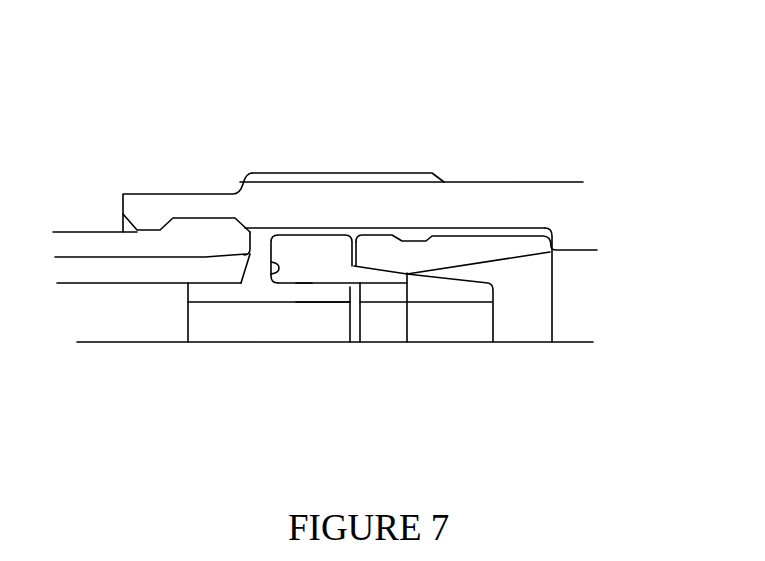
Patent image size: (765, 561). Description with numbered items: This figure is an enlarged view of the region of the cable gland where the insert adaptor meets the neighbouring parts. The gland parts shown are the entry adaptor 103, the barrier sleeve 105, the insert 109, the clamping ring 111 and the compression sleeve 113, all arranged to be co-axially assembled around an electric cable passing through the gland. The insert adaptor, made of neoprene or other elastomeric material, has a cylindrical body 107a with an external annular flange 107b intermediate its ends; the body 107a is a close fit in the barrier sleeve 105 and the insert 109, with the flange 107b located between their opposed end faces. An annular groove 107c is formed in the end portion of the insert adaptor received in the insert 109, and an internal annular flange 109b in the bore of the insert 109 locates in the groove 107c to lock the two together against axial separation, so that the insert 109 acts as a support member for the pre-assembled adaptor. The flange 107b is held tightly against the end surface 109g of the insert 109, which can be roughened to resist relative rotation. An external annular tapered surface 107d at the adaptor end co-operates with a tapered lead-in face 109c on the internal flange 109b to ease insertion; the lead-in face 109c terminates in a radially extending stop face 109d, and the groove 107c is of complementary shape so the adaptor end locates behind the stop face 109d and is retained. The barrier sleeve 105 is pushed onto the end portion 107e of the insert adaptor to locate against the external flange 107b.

The entry adaptor 103 is at (87, 240).
The barrier sleeve 105 is at (123, 275).
The cylindrical body 107a is at (253, 307).
The external annular flange 107b is at (261, 270).
The annular groove 107c is at (290, 287).
The external annular tapered surface 107d is at (343, 290).
The end portion 107e is at (207, 297).
The insert 109 is at (445, 292).
The internal annular flange 109b is at (307, 283).
The tapered lead-in face 109c is at (300, 283).
The stop face 109d is at (333, 280).
The end surface 109g is at (273, 270).
The clamping ring 111 is at (520, 247).
The compression sleeve 113 is at (533, 193).